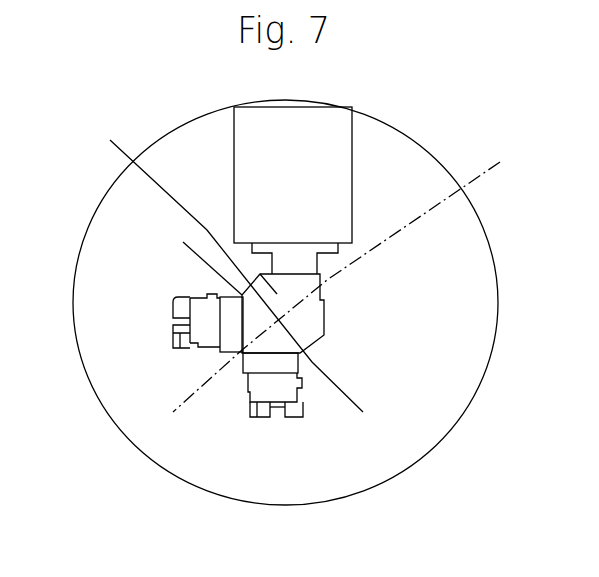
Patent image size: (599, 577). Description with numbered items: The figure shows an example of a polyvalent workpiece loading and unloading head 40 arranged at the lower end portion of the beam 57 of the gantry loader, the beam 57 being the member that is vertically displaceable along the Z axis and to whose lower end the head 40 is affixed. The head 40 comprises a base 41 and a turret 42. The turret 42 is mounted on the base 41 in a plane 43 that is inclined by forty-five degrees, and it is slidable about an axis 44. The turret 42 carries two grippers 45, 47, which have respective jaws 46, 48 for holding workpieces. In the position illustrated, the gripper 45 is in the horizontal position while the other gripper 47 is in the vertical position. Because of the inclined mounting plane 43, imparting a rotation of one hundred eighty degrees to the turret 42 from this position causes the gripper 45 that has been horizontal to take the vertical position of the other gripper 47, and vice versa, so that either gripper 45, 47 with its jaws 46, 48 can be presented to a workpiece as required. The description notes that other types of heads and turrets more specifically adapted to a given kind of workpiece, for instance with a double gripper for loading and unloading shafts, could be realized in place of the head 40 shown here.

The polyvalent head 40 is at (203, 157).
The base 41 is at (229, 272).
The turret 42 is at (210, 358).
The plane 43 is at (363, 412).
The axis 44 is at (346, 283).
The gripper 45 is at (200, 318).
The jaws 46 is at (175, 332).
The gripper 47 is at (270, 403).
The jaws 48 is at (297, 413).
The beam 57 is at (330, 190).